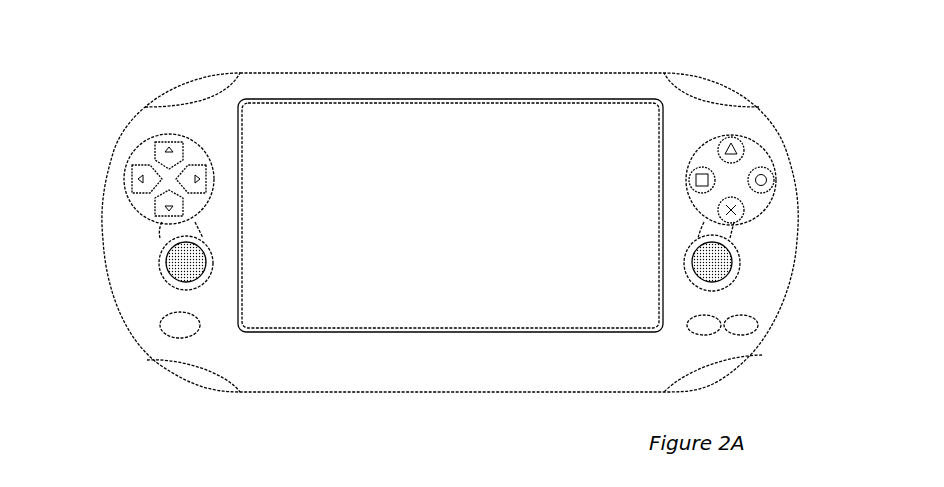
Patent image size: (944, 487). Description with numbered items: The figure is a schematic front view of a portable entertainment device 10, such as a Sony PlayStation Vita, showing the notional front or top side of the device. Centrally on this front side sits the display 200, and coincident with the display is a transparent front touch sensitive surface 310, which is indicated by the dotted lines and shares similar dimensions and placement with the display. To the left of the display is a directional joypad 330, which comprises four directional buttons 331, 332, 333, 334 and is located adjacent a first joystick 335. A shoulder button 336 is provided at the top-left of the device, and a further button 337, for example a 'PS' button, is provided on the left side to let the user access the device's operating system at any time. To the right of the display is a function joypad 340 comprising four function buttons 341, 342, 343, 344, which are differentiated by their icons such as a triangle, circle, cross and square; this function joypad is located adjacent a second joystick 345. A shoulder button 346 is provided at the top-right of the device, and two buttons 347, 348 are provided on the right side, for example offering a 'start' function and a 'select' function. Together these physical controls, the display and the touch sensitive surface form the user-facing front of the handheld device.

The portable entertainment device 10 is at (586, 66).
The display 200 is at (301, 95).
The front touch sensitive surface 310 is at (500, 111).
The directional joypad 330 is at (125, 164).
The directional button 331 is at (110, 155).
The directional button 332 is at (99, 177).
The directional button 333 is at (121, 181).
The directional button 334 is at (110, 203).
The first joystick 335 is at (154, 271).
The shoulder button 336 is at (180, 82).
The button 337 is at (155, 329).
The function joypad 340 is at (774, 159).
The function button 341 is at (790, 150).
The function button 342 is at (775, 176).
The function button 343 is at (805, 181).
The function button 344 is at (790, 210).
The second joystick 345 is at (746, 272).
The shoulder button 346 is at (721, 80).
The button 347 is at (763, 335).
The button 348 is at (824, 354).